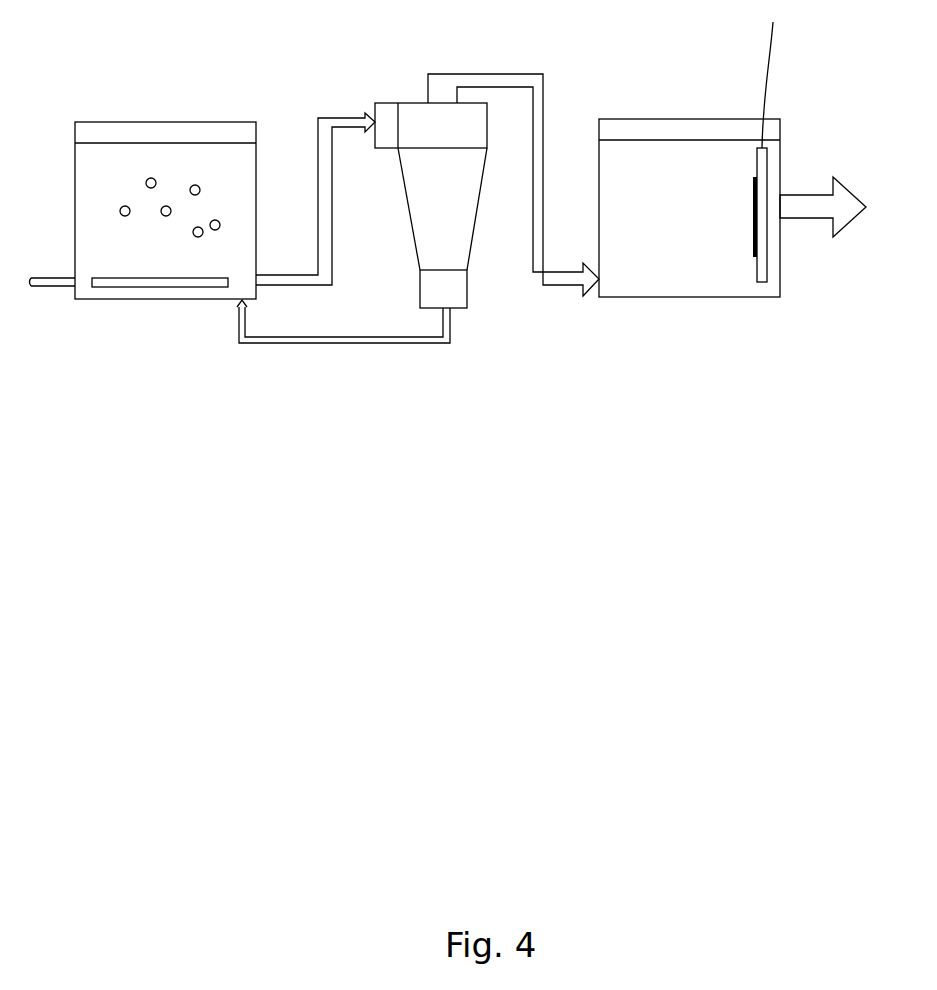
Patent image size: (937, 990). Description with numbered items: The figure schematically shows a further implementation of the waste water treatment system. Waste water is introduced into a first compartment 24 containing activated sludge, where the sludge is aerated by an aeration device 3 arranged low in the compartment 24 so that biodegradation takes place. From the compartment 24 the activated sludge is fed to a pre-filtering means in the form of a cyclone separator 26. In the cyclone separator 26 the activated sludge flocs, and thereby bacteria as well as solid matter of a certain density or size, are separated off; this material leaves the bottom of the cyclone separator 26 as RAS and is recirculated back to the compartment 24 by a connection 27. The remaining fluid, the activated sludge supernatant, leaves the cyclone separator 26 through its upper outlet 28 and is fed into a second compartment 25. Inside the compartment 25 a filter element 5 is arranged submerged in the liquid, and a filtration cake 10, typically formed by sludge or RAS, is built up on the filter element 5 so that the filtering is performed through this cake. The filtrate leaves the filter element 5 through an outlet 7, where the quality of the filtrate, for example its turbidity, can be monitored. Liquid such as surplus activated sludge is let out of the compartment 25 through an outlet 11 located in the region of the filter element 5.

The compartment 24 is at (169, 163).
The aeration device 3 is at (129, 323).
The cyclone separator 26 is at (371, 172).
The upper outlet 28 is at (513, 148).
The connection 27 is at (375, 321).
The compartment 25 is at (689, 163).
The outlet 7 is at (793, 85).
The filter element 5 is at (792, 249).
The filtration cake 10 is at (736, 255).
The outlet 11 is at (823, 205).